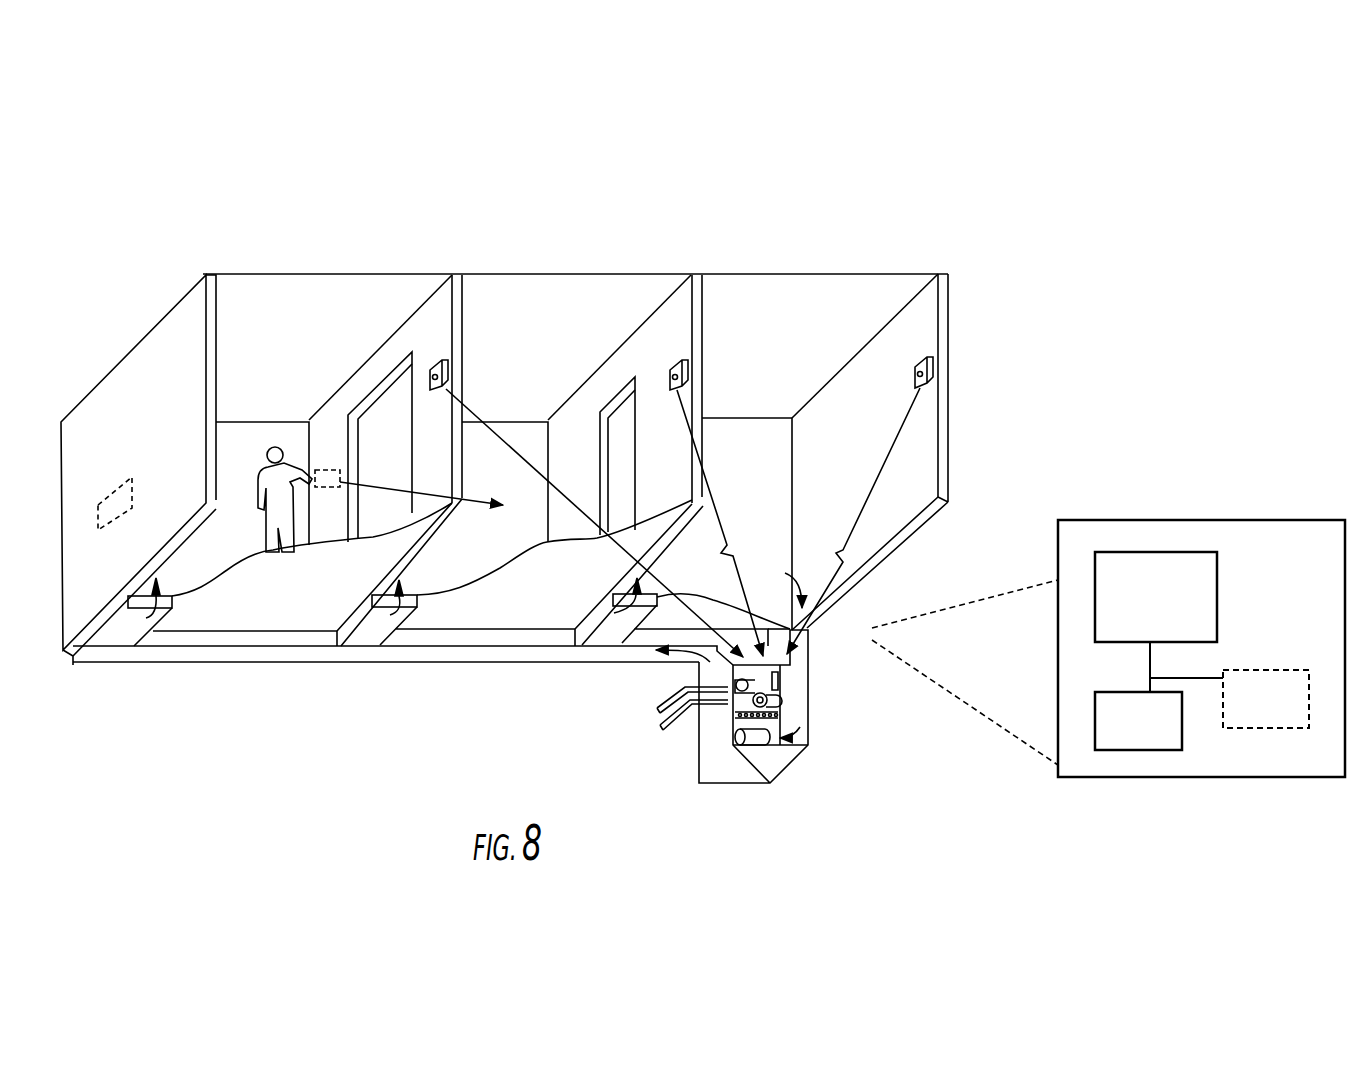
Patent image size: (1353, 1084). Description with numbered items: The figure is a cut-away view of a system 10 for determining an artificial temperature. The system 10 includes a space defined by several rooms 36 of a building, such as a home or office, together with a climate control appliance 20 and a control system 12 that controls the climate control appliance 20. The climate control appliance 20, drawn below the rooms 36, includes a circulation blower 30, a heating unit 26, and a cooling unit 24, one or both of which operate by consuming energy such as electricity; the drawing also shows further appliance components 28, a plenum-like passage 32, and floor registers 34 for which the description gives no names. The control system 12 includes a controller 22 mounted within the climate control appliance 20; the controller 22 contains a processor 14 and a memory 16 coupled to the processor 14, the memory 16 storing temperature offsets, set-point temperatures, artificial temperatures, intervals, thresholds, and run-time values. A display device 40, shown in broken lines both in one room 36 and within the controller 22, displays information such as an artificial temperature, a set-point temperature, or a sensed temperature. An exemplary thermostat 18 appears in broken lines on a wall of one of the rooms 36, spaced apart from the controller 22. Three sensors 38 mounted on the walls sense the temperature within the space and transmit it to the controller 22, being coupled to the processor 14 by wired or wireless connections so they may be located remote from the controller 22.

The system 10 is at (874, 212).
The control system 12 is at (1042, 386).
The processor 14 is at (1138, 721).
The memory 16 is at (1142, 608).
The thermostat 18 is at (133, 483).
The climate control appliance 20 is at (884, 752).
The controller 22 is at (790, 672).
The cooling unit 24 is at (740, 678).
The heating unit 26 is at (778, 715).
The blower 28 is at (777, 693).
The circulation blower 30 is at (727, 743).
The return air plenum 32 is at (617, 653).
The supply vents 34 is at (623, 603).
The rooms 36 is at (743, 277).
The sensors 38 is at (430, 372).
The display device 40 is at (318, 470).